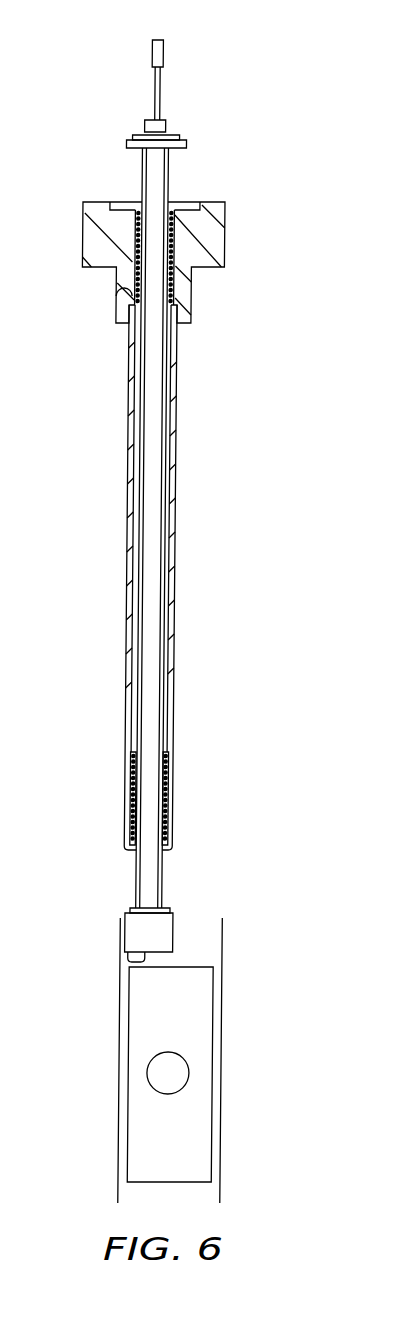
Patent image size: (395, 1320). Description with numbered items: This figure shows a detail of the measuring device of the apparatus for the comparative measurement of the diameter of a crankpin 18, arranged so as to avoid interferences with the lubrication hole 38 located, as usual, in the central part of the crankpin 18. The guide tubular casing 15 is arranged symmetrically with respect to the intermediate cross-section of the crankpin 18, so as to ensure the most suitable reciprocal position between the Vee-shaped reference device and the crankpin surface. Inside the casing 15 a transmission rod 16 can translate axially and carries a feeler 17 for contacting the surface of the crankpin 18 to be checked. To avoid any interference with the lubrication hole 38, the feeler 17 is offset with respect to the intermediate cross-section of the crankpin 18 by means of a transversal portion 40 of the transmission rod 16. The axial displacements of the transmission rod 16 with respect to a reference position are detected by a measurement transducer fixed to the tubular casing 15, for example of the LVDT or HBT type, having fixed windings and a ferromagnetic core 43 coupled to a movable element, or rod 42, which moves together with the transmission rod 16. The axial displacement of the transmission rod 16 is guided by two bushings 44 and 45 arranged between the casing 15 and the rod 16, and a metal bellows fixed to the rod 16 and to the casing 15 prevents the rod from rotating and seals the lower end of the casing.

The ferromagnetic core 43 is at (152, 53).
The rod 42 is at (154, 94).
The bushing 44 is at (122, 300).
The transmission rod 16 is at (150, 555).
The guide casing 15 is at (130, 650).
The bushing 45 is at (125, 787).
The transversal portion 40 is at (145, 928).
The feeler 17 is at (128, 962).
The crankpin 18 is at (158, 1028).
The lubrication hole 38 is at (160, 1088).